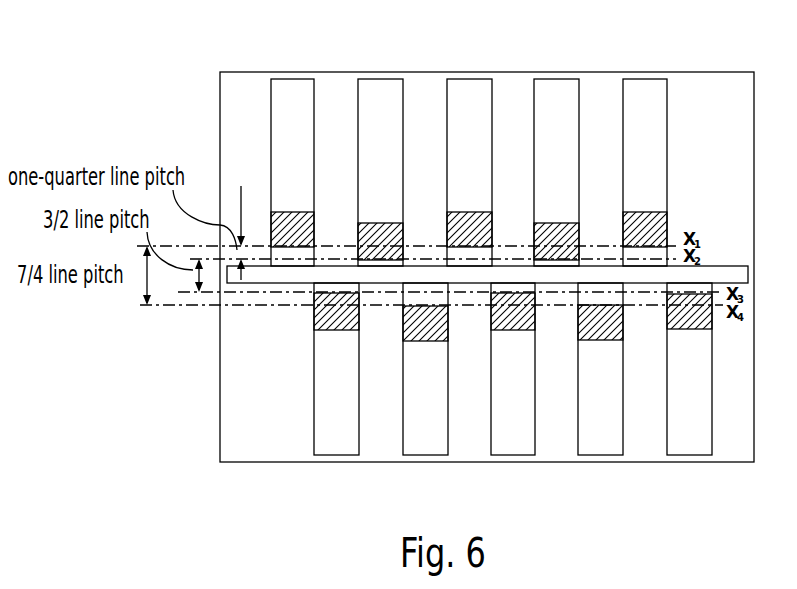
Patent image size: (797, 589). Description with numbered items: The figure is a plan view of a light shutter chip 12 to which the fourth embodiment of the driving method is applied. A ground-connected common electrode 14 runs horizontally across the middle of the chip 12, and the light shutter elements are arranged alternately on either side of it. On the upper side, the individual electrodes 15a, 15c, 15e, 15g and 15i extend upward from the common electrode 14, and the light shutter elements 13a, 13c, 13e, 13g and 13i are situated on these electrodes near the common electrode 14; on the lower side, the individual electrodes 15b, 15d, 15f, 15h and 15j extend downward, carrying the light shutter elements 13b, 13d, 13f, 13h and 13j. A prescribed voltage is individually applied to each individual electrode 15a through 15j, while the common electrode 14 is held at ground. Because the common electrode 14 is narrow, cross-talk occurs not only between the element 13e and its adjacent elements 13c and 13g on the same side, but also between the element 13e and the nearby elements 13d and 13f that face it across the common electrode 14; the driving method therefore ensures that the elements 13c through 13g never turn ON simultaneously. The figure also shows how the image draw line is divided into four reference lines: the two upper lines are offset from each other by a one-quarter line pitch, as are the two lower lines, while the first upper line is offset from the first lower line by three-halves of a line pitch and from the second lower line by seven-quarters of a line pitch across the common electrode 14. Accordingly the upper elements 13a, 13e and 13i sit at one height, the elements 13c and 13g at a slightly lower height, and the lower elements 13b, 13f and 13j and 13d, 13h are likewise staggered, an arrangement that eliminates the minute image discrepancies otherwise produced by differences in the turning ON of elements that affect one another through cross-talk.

The light shutter chip 12 is at (512, 66).
The common electrode 14 is at (287, 277).
The light shutter element 13a is at (272, 223).
The light shutter element 13b is at (315, 315).
The light shutter element 13c is at (362, 235).
The light shutter element 13d is at (407, 325).
The light shutter element 13e is at (447, 223).
The light shutter element 13f is at (493, 312).
The light shutter element 13g is at (535, 235).
The light shutter element 13h is at (580, 327).
The light shutter element 13i is at (623, 223).
The light shutter element 13j is at (670, 313).
The individual electrode 15a is at (307, 130).
The individual electrode 15b is at (317, 393).
The individual electrode 15c is at (393, 130).
The individual electrode 15d is at (408, 393).
The individual electrode 15e is at (483, 130).
The individual electrode 15f is at (498, 393).
The individual electrode 15g is at (568, 130).
The individual electrode 15h is at (583, 392).
The individual electrode 15i is at (657, 130).
The individual electrode 15j is at (673, 392).